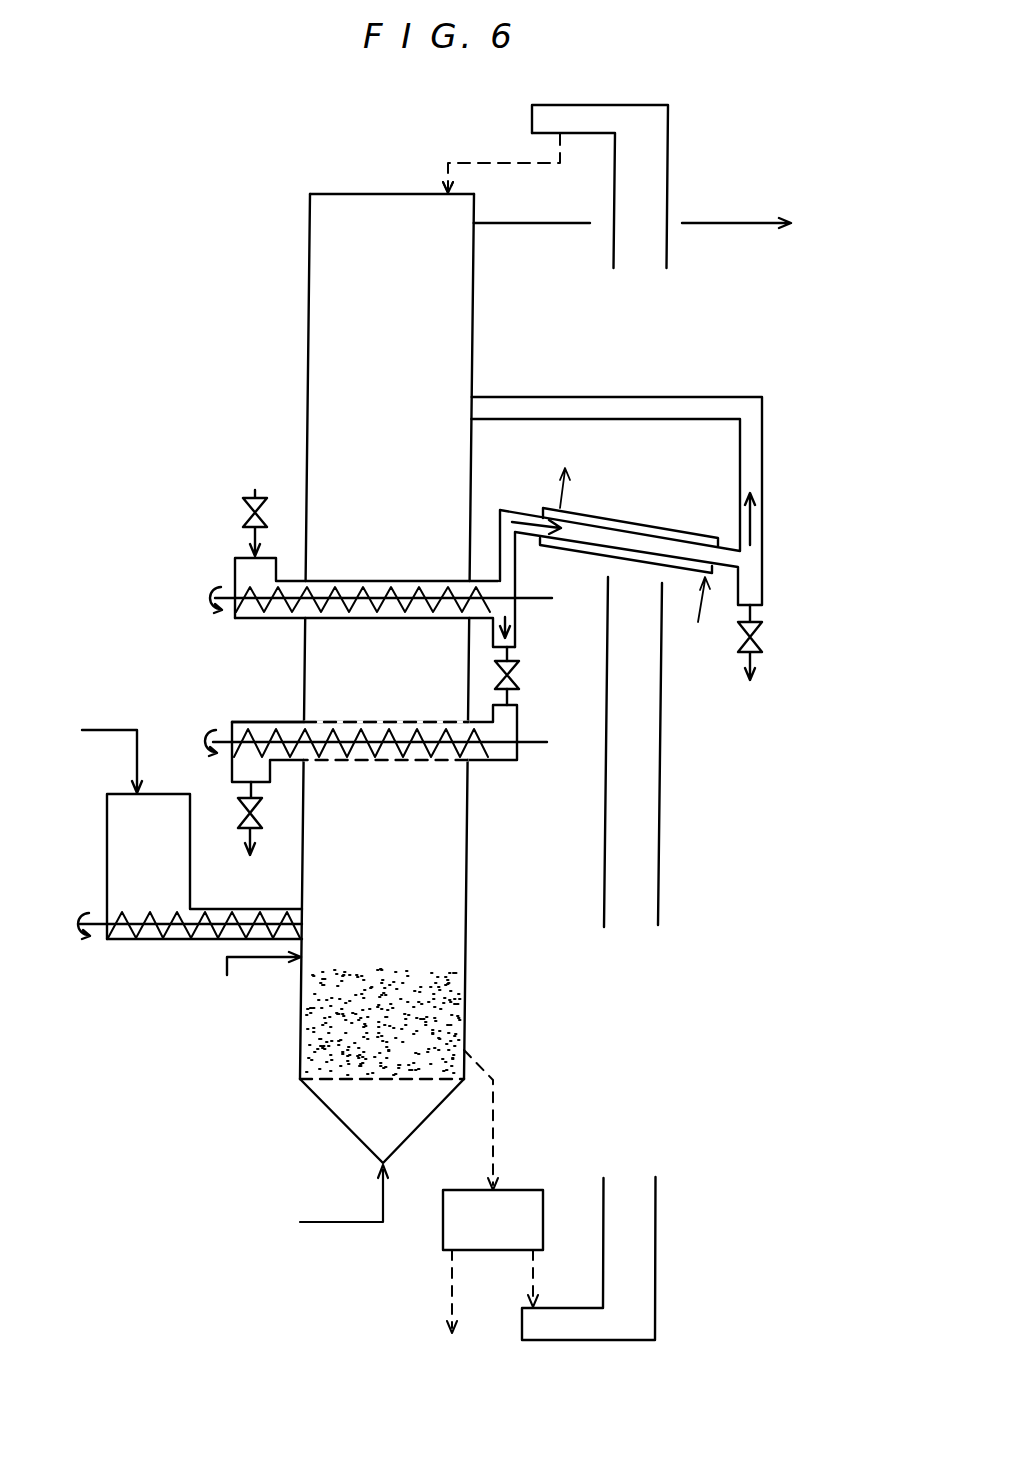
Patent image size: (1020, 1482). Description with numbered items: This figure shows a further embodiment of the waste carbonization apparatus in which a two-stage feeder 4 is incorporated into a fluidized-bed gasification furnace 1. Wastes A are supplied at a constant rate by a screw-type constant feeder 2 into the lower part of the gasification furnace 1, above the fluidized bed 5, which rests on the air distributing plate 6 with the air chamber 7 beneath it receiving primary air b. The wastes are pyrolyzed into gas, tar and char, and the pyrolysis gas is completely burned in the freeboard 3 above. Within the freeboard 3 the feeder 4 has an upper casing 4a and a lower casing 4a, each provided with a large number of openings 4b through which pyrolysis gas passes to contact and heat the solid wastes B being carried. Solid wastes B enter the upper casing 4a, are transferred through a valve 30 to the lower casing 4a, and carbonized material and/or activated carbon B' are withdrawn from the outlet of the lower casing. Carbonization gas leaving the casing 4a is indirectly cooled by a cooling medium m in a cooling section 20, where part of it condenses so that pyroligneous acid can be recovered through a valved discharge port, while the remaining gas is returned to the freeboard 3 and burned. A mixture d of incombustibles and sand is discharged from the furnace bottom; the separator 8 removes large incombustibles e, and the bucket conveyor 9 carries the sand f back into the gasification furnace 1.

The fluidized-bed gasification furnace 1 is at (335, 192).
The constant feeder 2 is at (107, 845).
The freeboard 3 is at (382, 225).
The feeder 4 is at (520, 763).
The casing 4a is at (353, 722).
The openings 4b is at (400, 762).
The fluidized bed 5 is at (457, 1012).
The air distributing plate 6 is at (433, 1083).
The air chamber 7 is at (340, 1107).
The separator 8 is at (443, 1228).
The bucket conveyor 9 is at (655, 1247).
The cooling section 20 is at (633, 518).
The valve 30 is at (513, 675).